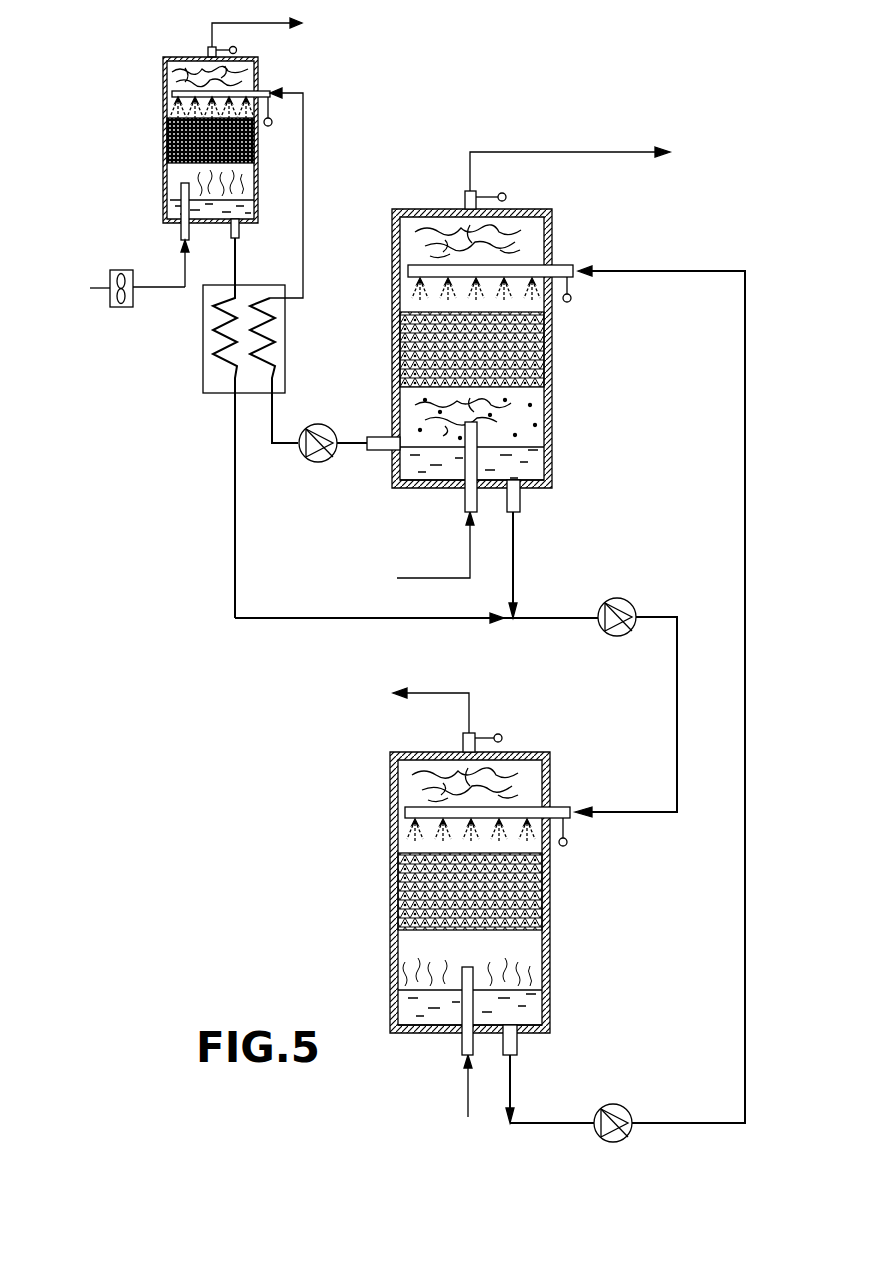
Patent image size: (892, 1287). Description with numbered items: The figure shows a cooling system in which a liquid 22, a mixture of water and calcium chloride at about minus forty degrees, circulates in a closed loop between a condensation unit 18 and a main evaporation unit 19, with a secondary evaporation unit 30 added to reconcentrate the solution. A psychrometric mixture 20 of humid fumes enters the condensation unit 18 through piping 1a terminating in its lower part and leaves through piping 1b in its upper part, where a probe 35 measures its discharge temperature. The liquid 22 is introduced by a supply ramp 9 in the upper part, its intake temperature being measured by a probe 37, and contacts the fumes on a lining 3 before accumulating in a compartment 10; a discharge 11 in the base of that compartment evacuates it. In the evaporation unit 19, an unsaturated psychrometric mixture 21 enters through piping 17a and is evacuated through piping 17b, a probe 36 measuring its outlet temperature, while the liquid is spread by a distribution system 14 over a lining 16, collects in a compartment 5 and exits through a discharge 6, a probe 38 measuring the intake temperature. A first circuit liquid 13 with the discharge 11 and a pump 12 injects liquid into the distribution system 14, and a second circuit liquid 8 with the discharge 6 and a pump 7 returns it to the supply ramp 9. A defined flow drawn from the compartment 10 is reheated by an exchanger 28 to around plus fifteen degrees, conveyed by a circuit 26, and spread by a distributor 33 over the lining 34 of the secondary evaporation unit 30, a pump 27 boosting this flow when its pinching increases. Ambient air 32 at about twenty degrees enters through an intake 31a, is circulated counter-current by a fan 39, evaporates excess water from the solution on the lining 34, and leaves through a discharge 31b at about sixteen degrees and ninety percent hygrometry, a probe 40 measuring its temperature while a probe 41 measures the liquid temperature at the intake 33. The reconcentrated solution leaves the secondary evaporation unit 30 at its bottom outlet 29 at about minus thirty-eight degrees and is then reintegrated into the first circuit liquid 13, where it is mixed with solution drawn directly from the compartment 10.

The piping 1a is at (467, 506).
The piping 1b is at (465, 198).
The lining 3 is at (392, 357).
The compartment 5 is at (534, 1013).
The discharge 6 is at (520, 1054).
The pump 7 is at (616, 1104).
The second circuit liquid 8 is at (745, 628).
The supply ramp 9 is at (566, 265).
The compartment 10 is at (538, 468).
The discharge 11 is at (528, 506).
The pump 12 is at (624, 602).
The first circuit liquid 13 is at (677, 676).
The distribution system 14 is at (564, 808).
The lining 16 is at (398, 892).
The piping 17a is at (462, 1056).
The piping 17b is at (463, 740).
The condensation unit 18 is at (392, 230).
The evaporation unit 19 is at (390, 768).
The psychrometric mixture 20 is at (539, 363).
The psychrometric mixture 21 is at (423, 917).
The liquid 22 is at (532, 478).
The circuit 26 is at (303, 115).
The pump 27 is at (328, 424).
The exchanger 28 is at (285, 302).
The liquid outlet of regeneration vessel 29 is at (239, 231).
The secondary evaporation unit 30 is at (163, 90).
The intake 31a is at (181, 234).
The discharge 31b is at (209, 50).
The air 32 is at (195, 159).
The distributor 33 is at (272, 92).
The lining 34 is at (167, 138).
The probe 35 is at (503, 192).
The probe 36 is at (499, 734).
The probe 37 is at (571, 298).
The probe 38 is at (567, 842).
The fan 39 is at (133, 303).
The probe 40 is at (247, 40).
The probe 41 is at (272, 124).